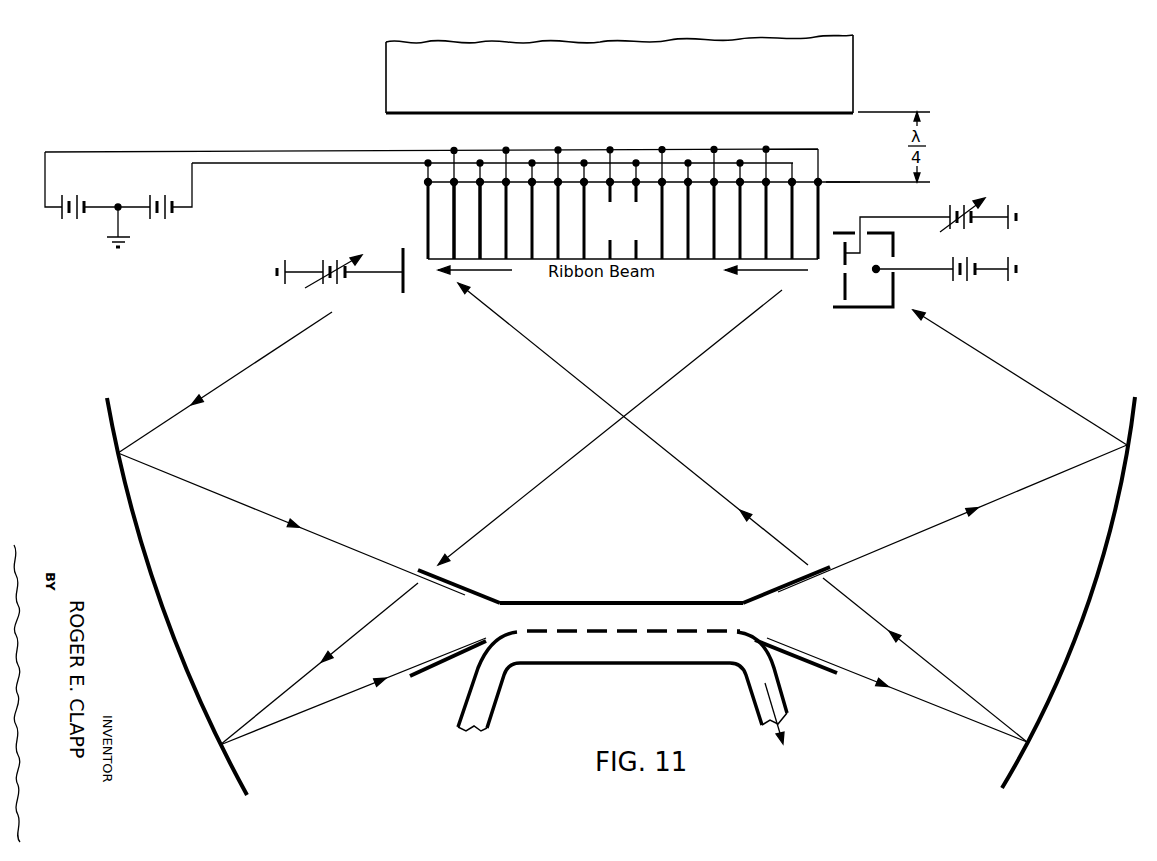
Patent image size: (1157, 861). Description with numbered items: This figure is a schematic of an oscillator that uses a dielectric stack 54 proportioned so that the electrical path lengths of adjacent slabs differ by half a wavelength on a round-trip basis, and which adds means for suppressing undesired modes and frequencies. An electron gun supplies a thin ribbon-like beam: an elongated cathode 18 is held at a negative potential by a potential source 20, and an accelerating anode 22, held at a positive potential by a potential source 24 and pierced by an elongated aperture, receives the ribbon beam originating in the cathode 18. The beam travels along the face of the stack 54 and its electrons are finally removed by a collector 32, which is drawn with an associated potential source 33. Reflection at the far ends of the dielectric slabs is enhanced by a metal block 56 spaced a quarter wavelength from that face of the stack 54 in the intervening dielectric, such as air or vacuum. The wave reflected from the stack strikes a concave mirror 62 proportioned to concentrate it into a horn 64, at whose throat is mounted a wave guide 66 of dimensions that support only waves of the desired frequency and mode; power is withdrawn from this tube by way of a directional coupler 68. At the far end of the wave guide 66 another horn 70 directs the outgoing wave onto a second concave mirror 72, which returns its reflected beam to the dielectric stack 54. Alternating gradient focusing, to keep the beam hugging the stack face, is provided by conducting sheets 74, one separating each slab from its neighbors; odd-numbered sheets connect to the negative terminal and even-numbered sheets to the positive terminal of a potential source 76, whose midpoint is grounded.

The metal block 56 is at (636, 82).
The dielectric stack 54 is at (636, 230).
The conducting sheets 74 is at (477, 204).
The potential source 76 is at (167, 190).
The variable bias supply 33 is at (336, 258).
The collector 32 is at (407, 285).
The accelerating anode 22 is at (841, 292).
The cathode 18 is at (876, 273).
The potential source 20 is at (968, 280).
The potential source 24 is at (960, 205).
The concave mirror 62 is at (153, 587).
The horn 64 is at (457, 577).
The wave guide 66 is at (585, 601).
The horn 70 is at (794, 581).
The concave mirror 72 is at (1099, 572).
The directional coupler 68 is at (637, 654).